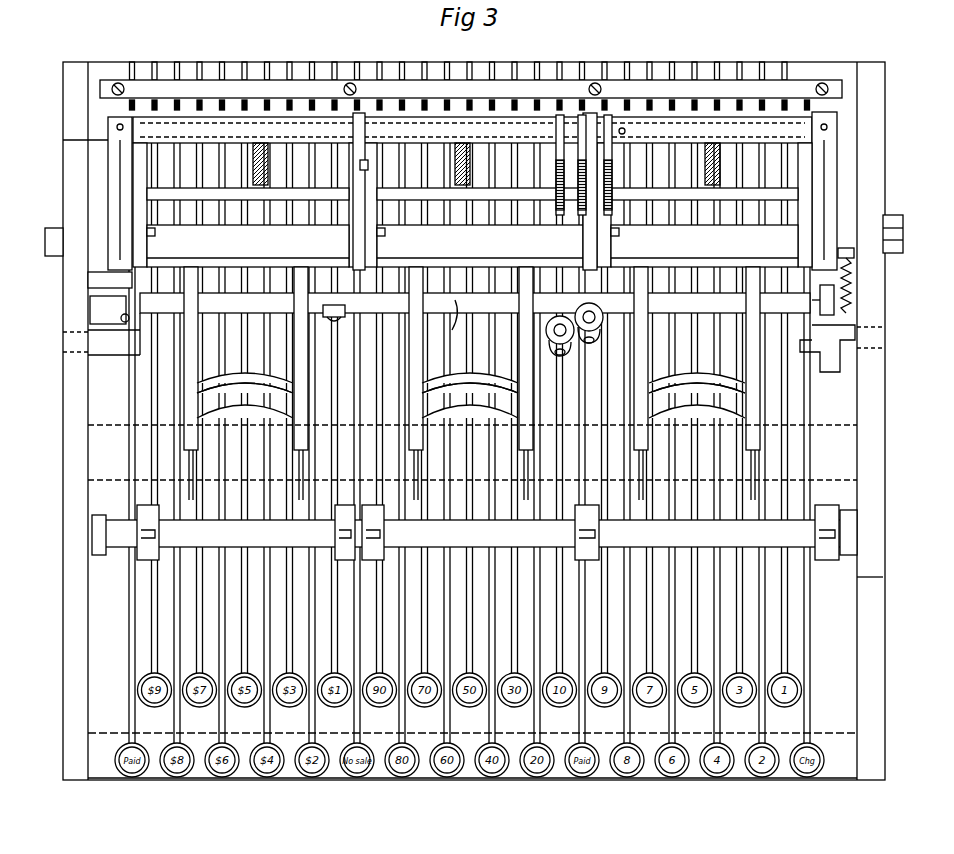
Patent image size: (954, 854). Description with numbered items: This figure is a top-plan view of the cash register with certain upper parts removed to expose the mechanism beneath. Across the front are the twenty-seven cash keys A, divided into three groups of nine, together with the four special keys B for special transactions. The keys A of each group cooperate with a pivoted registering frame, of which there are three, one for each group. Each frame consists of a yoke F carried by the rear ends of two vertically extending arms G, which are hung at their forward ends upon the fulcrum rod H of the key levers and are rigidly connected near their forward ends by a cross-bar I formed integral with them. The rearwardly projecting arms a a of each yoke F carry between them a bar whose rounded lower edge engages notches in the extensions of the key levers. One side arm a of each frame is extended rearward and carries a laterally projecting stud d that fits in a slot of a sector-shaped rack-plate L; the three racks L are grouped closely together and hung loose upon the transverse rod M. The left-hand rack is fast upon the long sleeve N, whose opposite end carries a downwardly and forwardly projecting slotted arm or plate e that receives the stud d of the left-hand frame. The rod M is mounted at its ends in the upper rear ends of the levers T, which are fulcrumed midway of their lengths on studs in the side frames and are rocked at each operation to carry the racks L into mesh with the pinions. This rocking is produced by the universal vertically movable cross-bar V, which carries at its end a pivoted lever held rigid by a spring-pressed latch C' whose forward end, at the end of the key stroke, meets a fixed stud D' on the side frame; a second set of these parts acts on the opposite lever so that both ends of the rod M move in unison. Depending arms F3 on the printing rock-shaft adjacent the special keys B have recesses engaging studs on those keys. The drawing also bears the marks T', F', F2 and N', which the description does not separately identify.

The cash keys A is at (788, 622).
The special keys B is at (810, 712).
The rod M is at (472, 130).
The lever T is at (83, 193).
The right slide rod T' is at (862, 191).
The key frame bar F' is at (472, 205).
The side arms of yoke frame a is at (466, 239).
The long sleeve N is at (486, 154).
The sector-shaped rack-plate L is at (574, 165).
The arm or plate e is at (372, 143).
The stud d is at (610, 138).
The arms of registering frame G is at (472, 383).
The cross-bar I is at (471, 392).
The fulcrum rod H is at (472, 452).
The depending arms F3 is at (335, 305).
The cross-bar V is at (456, 324).
The roller cam F2 is at (575, 360).
The yoke F is at (474, 532).
The spring N' is at (873, 280).
The spring-pressed latch C' is at (808, 300).
The fixed stud D' is at (827, 348).